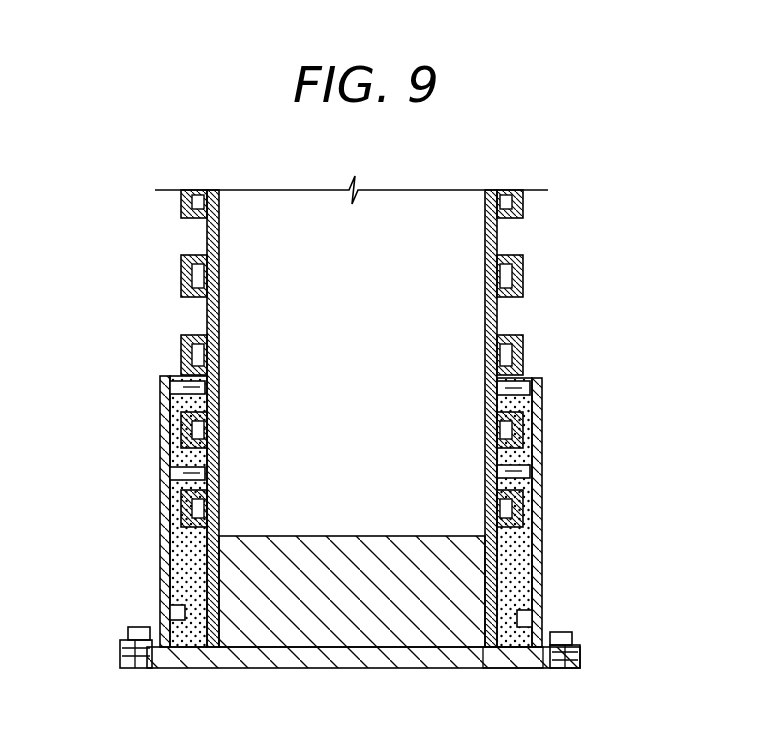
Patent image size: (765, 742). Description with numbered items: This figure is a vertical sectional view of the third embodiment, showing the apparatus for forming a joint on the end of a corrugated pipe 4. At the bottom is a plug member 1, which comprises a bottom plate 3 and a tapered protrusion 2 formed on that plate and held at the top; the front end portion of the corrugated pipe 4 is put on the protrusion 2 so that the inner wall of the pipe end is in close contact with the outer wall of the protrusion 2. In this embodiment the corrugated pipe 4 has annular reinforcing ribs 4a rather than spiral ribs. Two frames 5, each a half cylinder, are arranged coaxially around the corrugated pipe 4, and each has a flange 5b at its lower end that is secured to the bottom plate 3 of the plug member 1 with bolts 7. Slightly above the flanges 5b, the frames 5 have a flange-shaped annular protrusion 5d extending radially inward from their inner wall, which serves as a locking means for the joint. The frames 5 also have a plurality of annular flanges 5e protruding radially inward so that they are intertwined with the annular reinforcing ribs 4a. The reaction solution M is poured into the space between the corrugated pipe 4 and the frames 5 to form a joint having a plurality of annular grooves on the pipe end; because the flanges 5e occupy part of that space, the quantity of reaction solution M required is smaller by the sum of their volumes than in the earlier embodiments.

The plug member 1 is at (362, 670).
The protrusion 2 is at (311, 563).
The bottom plate 3 is at (520, 662).
The corrugated pipe 4 is at (401, 418).
The annular reinforcing ribs 4a is at (522, 350).
The frames 5 is at (356, 511).
The flanges 5b is at (122, 637).
The annular protrusion 5d is at (158, 617).
The annular flanges 5e is at (160, 442).
The bolts 7 is at (566, 628).
The reaction solution M is at (540, 497).